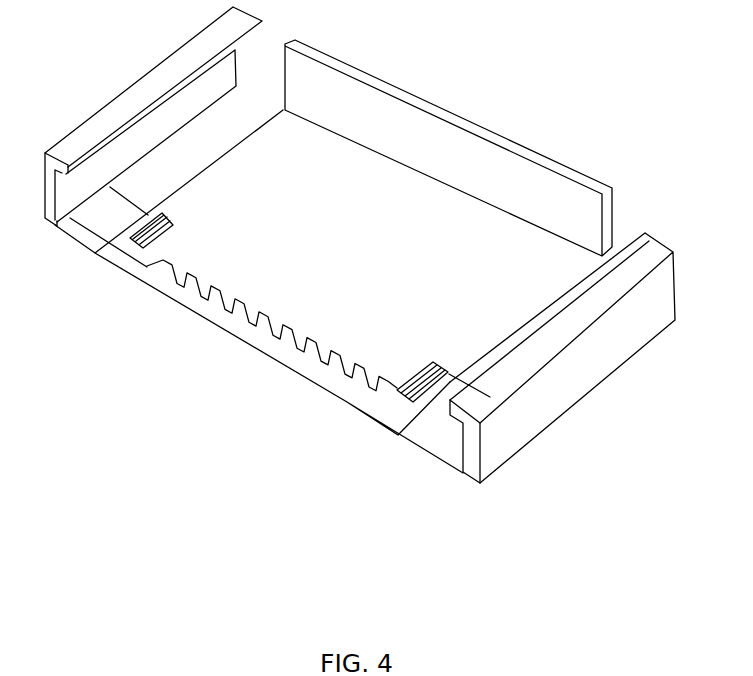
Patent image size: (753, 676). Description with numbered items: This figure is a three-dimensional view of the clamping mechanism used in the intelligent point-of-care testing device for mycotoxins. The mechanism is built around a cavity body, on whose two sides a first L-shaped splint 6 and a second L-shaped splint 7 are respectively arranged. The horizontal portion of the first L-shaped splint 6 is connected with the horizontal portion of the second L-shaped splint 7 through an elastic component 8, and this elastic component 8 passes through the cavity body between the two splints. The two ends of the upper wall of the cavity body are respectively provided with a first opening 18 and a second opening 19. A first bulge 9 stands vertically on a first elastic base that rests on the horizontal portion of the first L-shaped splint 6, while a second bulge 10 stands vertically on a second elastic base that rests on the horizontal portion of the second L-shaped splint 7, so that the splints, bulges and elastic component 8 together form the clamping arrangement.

The first L-shaped splint 6 is at (73, 221).
The second L-shaped splint 7 is at (495, 445).
The elastic component 8 is at (268, 333).
The first bulge 9 is at (146, 248).
The second bulge 10 is at (397, 388).
The first opening 18 is at (173, 223).
The second opening 19 is at (447, 371).